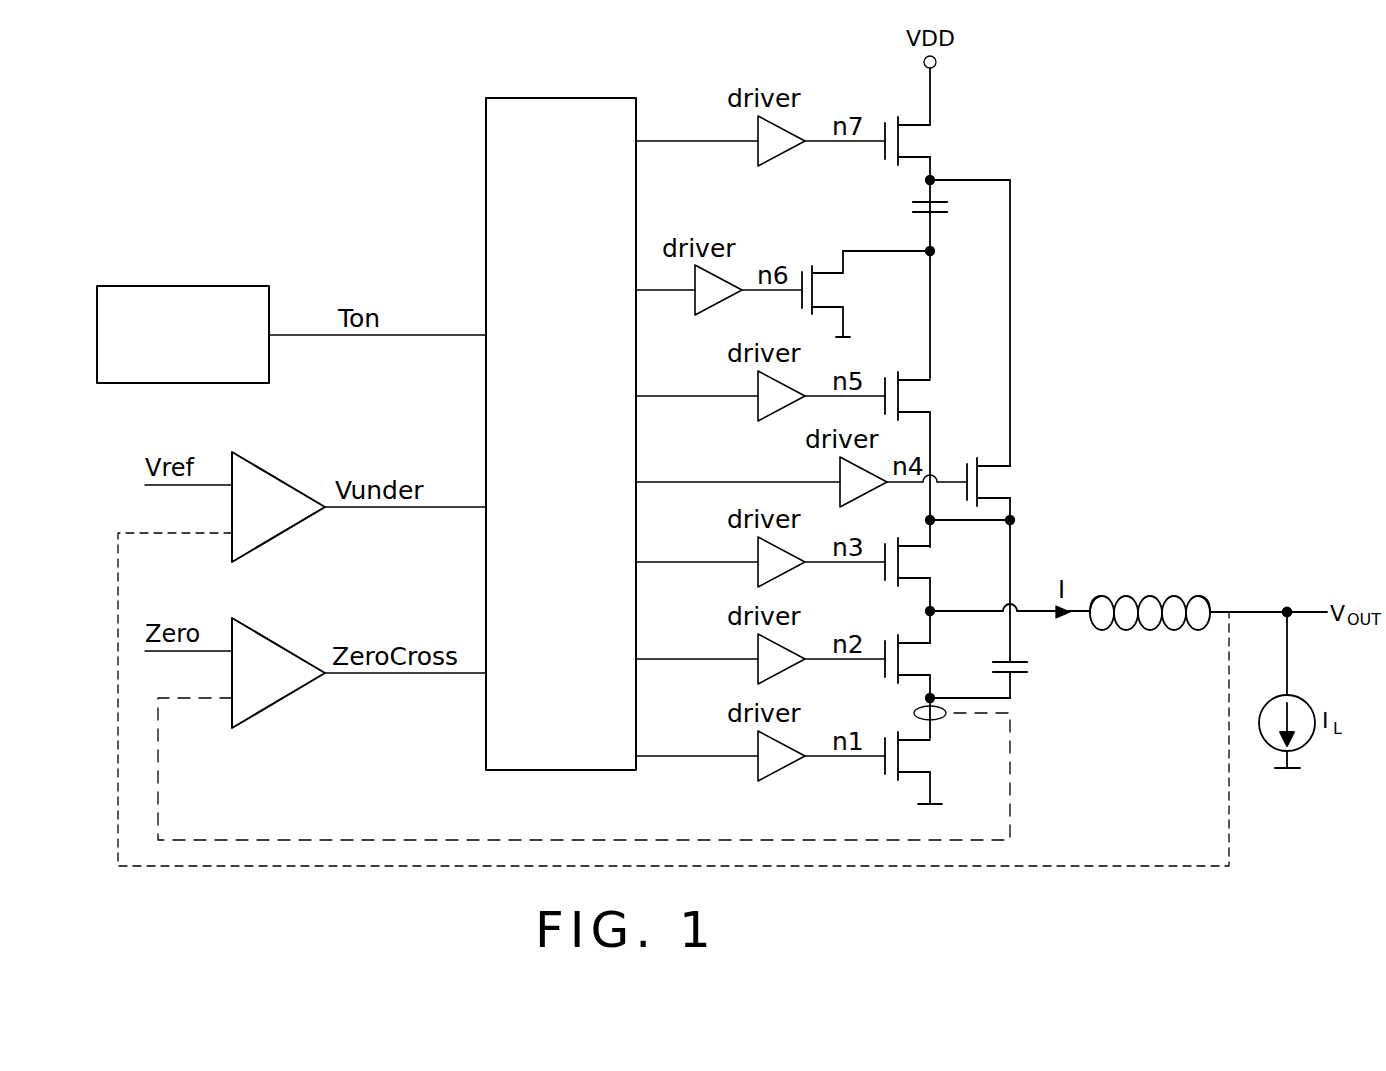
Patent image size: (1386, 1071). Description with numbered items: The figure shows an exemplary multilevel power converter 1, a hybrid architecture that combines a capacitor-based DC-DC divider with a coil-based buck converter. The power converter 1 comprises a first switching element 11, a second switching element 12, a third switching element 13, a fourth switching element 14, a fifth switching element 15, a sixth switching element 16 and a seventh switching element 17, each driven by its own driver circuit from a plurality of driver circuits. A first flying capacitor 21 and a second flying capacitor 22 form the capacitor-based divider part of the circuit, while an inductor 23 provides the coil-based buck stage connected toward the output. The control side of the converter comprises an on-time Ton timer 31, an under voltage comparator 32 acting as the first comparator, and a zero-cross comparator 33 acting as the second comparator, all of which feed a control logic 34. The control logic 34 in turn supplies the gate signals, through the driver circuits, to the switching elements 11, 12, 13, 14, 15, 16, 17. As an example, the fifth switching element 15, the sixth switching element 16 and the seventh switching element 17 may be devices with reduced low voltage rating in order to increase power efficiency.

The multilevel power converter 1 is at (275, 184).
The first switching element 11 is at (941, 145).
The second switching element 12 is at (942, 399).
The third switching element 13 is at (855, 289).
The fourth switching element 14 is at (1021, 483).
The fifth switching element 15 is at (944, 563).
The sixth switching element 16 is at (944, 660).
The seventh switching element 17 is at (944, 759).
The first flying capacitor 21 is at (944, 228).
The second flying capacitor 22 is at (1038, 672).
The inductor 23 is at (1164, 585).
The on-time Ton timer 31 is at (153, 286).
The under voltage comparator 32 is at (277, 476).
The zero-cross comparator 33 is at (277, 642).
The control logic 34 is at (547, 98).